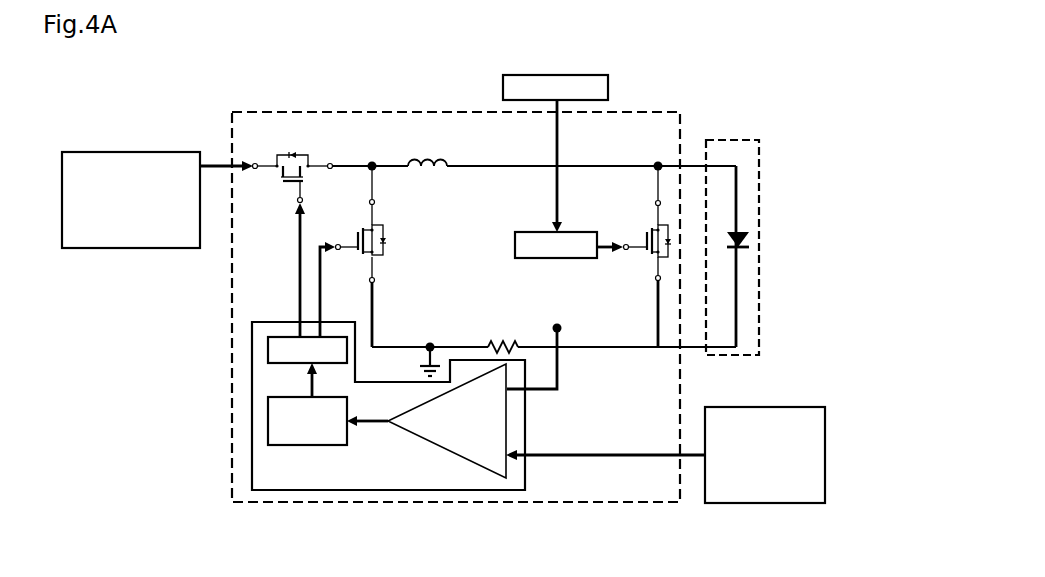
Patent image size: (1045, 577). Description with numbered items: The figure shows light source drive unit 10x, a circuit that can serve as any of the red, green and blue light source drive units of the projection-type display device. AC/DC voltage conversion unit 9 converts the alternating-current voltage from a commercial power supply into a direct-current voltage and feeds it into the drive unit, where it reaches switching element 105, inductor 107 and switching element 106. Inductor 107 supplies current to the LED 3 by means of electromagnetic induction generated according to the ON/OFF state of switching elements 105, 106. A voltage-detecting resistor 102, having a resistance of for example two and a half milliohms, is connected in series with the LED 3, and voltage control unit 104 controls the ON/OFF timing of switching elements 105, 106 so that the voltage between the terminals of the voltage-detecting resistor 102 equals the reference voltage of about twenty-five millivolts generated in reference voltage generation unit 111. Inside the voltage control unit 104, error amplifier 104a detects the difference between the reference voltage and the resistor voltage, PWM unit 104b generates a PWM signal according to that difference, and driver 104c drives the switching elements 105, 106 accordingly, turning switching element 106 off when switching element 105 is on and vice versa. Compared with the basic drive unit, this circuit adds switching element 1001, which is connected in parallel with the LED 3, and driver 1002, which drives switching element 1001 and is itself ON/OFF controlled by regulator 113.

The AC/DC voltage conversion unit 9 is at (135, 152).
The light source drive unit 10x is at (232, 283).
The switching element 105 is at (308, 163).
The switching element 106 is at (378, 259).
The inductor 107 is at (443, 161).
The regulator 113 is at (560, 76).
The switching element 1001 is at (651, 232).
The driver 1002 is at (590, 258).
The voltage-detecting resistor 102 is at (517, 345).
The LED 3 is at (760, 243).
The voltage control unit 104 is at (353, 486).
The error amplifier 104a is at (421, 441).
The PWM unit 104b is at (293, 446).
The driver 104c is at (297, 364).
The reference voltage generation unit 111 is at (769, 406).